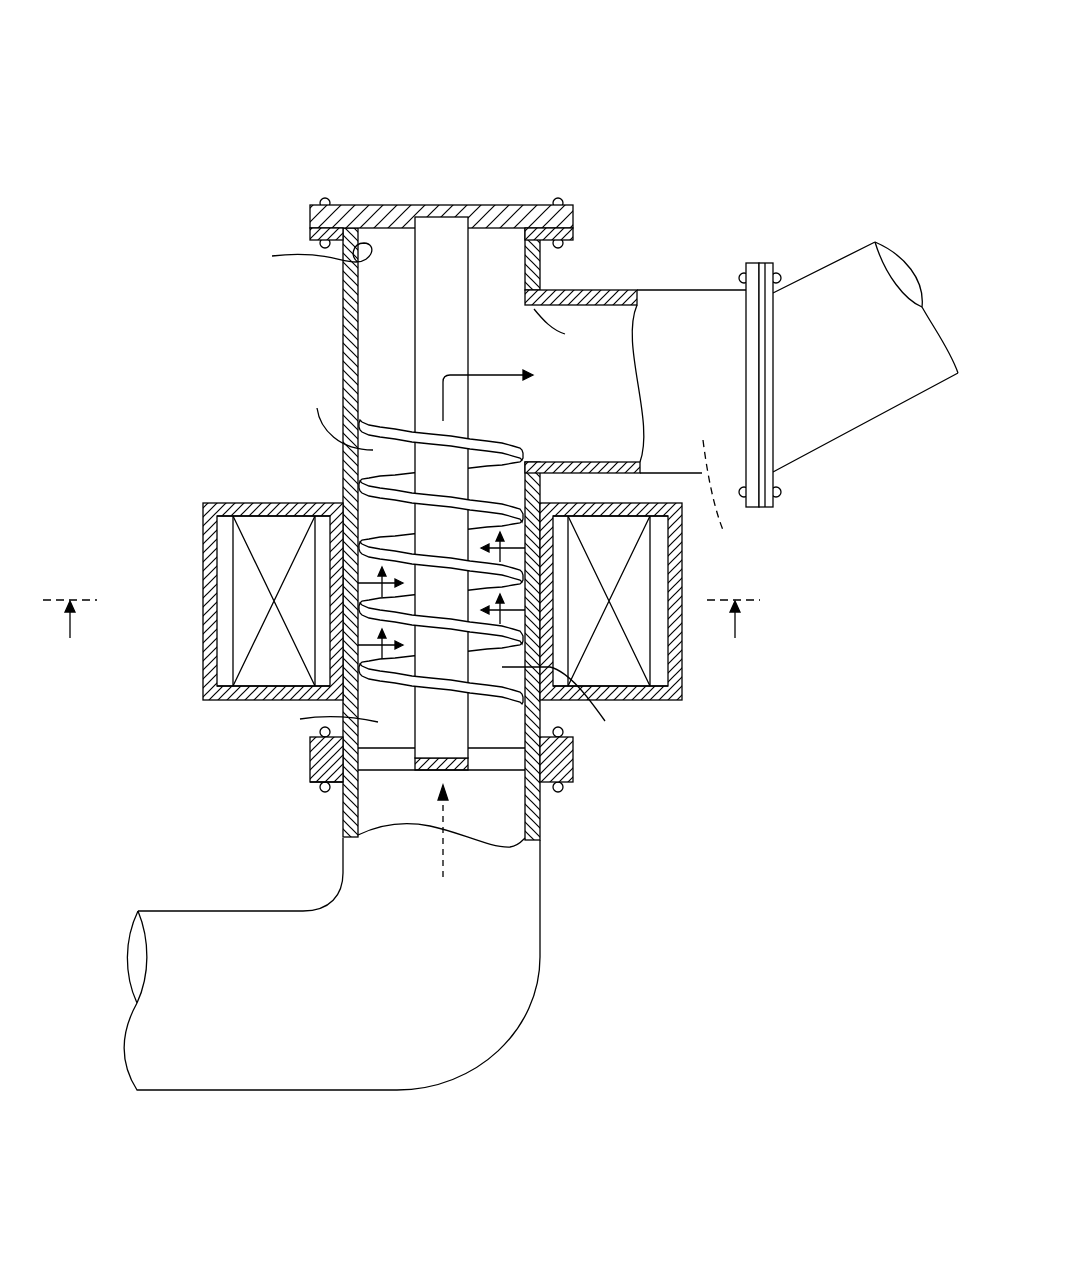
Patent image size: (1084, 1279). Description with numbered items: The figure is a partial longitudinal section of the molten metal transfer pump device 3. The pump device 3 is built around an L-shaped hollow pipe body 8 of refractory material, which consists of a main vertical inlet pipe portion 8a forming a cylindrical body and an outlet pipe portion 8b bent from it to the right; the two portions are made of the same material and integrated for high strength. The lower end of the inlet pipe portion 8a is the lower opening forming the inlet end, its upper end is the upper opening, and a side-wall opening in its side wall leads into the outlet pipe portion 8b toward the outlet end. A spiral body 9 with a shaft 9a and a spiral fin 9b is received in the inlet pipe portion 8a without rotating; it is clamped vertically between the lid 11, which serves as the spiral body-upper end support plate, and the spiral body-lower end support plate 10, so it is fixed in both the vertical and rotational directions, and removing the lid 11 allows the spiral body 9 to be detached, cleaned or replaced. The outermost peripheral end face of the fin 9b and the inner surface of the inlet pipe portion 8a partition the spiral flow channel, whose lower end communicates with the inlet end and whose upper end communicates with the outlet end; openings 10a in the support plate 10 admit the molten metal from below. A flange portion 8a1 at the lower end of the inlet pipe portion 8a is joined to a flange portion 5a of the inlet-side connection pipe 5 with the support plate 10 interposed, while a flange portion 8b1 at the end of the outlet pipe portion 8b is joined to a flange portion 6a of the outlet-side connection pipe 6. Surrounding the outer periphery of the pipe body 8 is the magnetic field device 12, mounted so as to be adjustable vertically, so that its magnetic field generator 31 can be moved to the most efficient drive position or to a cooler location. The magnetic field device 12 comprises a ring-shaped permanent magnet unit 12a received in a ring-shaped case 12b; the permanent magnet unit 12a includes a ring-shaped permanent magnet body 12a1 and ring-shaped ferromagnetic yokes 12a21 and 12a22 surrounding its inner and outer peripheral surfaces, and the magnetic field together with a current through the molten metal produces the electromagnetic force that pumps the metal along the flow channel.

The pump device 3 is at (724, 71).
The inlet-side connection pipe 5 is at (487, 1012).
The flange portion of the inlet-side connection pipe 5a is at (318, 778).
The outlet-side connection pipe 6 is at (833, 280).
The flange portion of the outlet-side connection pipe 6a is at (763, 263).
The pipe body 8 is at (510, 525).
The inlet pipe portion 8a is at (352, 333).
The flange portion of the inlet pipe portion 8a1 is at (322, 742).
The outlet pipe portion 8b is at (592, 298).
The flange portion of the outlet pipe portion 8b1 is at (749, 263).
The spiral body 9 is at (464, 487).
The shaft of screw member 9a is at (455, 331).
The spiral fin 9b is at (497, 445).
The spiral body-lower end support plate 10 is at (492, 775).
The openings of lower flange 10a is at (388, 760).
The lid 11 is at (514, 197).
The magnetic field device 12 is at (367, 562).
The permanent magnet unit 12a is at (384, 568).
The permanent magnet body 12a1 is at (240, 592).
The yoke 12a21 is at (226, 632).
The yoke 12a22 is at (324, 503).
The case 12b is at (256, 493).
The magnetic field generator 31 is at (140, 522).